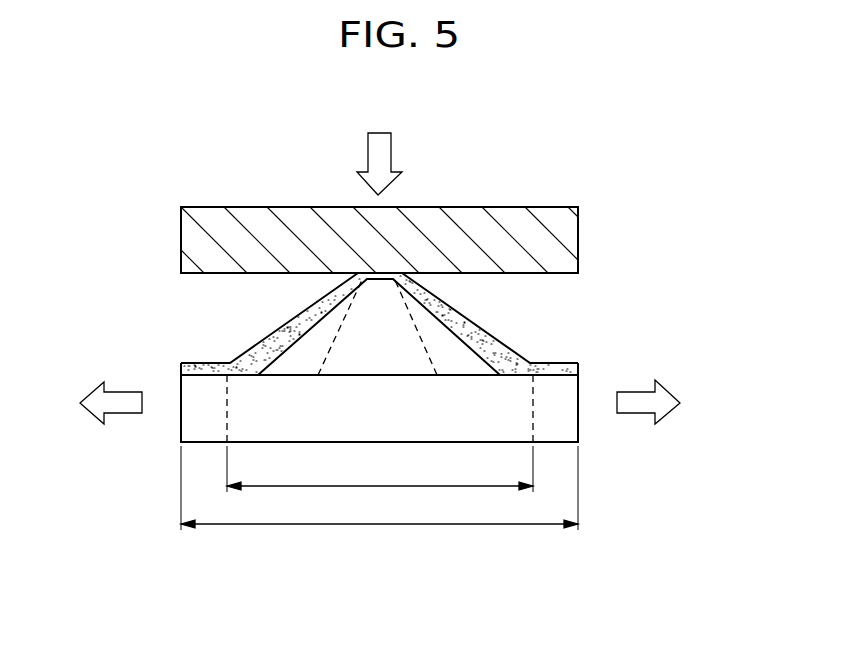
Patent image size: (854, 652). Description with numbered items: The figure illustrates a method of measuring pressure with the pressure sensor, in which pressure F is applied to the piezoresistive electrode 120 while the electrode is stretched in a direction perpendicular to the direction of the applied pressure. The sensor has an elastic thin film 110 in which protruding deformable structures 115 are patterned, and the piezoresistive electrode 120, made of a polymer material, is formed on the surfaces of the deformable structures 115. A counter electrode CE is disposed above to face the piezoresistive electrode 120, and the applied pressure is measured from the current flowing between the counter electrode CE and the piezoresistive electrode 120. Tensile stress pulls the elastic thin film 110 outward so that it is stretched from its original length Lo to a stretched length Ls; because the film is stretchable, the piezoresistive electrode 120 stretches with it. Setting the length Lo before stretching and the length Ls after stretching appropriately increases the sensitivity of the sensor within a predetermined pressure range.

The counter electrode CE is at (572, 239).
The applied force F is at (379, 146).
The elastic thin film 110 is at (572, 403).
The deformable structures 115 is at (400, 330).
The piezoresistive electrode 120 is at (572, 372).
The length of the elastic thin film before tensile stress is applied Lo is at (380, 469).
The length of the elastic thin film after tensile stress is applied Ls is at (379, 501).